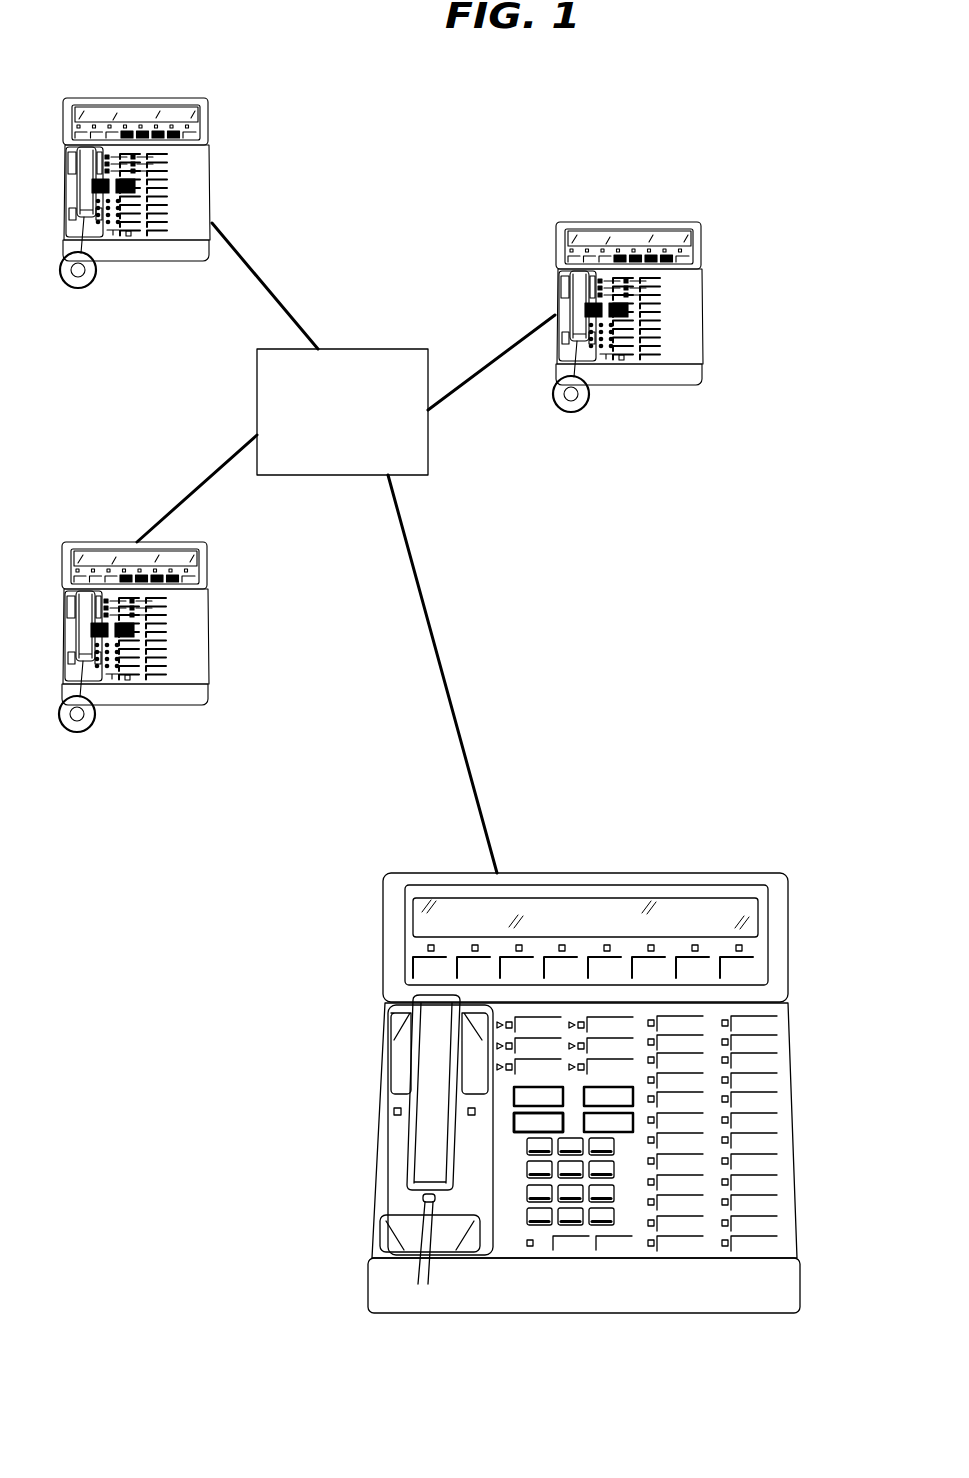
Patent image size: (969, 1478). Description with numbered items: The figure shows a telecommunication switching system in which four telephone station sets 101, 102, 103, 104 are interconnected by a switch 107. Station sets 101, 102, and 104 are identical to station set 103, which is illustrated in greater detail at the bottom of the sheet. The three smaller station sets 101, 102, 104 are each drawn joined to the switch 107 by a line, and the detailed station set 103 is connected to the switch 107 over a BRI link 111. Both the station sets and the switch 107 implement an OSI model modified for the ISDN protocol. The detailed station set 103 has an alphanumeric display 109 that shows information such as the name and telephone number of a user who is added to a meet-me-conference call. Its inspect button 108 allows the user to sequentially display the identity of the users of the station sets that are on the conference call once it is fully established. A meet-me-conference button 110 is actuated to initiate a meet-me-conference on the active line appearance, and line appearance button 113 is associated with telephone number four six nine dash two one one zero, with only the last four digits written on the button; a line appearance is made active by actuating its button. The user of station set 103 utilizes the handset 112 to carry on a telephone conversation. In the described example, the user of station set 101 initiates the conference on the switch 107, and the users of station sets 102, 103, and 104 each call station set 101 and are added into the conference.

The station set 101 is at (110, 98).
The station set 102 is at (585, 222).
The station set 103 is at (484, 739).
The station set 104 is at (150, 702).
The switch 107 is at (367, 348).
The inspect button 108 is at (515, 1127).
The alphanumeric display 109 is at (588, 908).
The meet-me-conference button 110 is at (514, 1097).
The BRI link 111 is at (424, 603).
The handset 112 is at (422, 1164).
The line appearance button 113 is at (512, 1027).